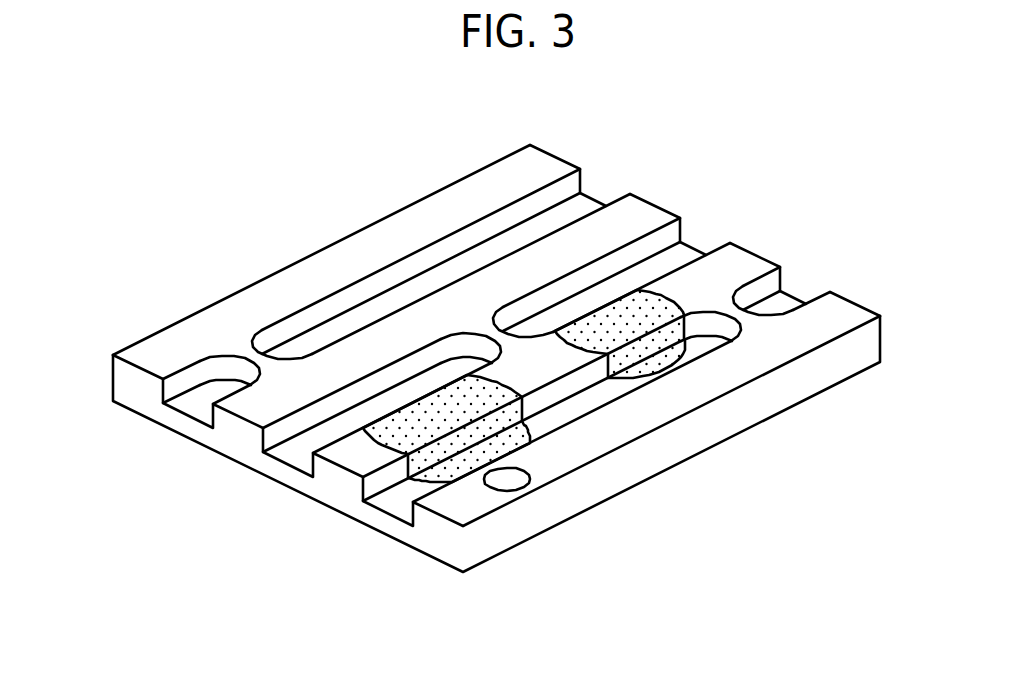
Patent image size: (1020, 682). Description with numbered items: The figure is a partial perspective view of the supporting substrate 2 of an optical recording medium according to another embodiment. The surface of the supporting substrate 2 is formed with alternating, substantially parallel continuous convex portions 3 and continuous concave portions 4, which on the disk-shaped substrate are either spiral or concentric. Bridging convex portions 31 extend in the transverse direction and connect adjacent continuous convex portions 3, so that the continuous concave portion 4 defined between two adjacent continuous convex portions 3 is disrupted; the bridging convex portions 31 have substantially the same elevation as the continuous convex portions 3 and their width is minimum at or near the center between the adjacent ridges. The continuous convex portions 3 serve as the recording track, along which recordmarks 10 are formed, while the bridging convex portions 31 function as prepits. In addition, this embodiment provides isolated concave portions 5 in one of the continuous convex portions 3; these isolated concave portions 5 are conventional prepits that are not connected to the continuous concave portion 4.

The supporting substrate 2 is at (680, 445).
The continuous convex portion 3 is at (545, 163).
The bridging convex portion 31 is at (248, 352).
The continuous concave portion 4 is at (203, 405).
The isolated concave portion 5 is at (503, 482).
The recordmark 10 is at (437, 407).